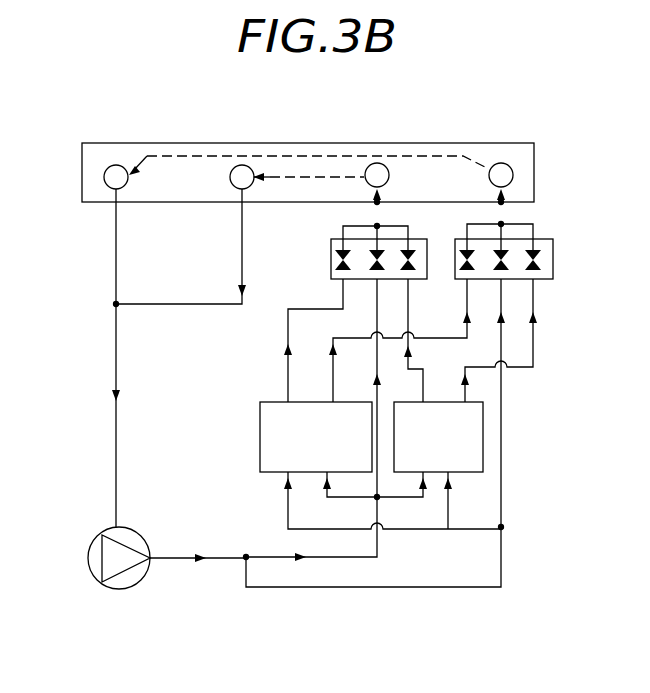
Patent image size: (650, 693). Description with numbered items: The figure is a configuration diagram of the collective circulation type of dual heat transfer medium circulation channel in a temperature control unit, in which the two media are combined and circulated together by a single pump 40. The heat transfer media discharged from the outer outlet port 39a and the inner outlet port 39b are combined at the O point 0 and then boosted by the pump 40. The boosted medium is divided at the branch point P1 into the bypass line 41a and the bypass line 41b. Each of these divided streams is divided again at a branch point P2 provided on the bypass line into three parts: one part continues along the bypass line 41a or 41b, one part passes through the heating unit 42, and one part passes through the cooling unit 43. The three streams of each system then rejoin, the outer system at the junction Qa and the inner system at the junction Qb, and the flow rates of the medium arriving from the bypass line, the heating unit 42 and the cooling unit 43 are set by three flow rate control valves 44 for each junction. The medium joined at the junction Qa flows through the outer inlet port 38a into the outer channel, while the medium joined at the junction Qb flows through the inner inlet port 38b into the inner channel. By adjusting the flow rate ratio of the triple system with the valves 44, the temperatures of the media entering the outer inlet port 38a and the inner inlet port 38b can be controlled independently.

The outer inlet port 38a is at (501, 163).
The inner inlet port 38b is at (377, 163).
The outer outlet port 39a is at (116, 165).
The inner outlet port 39b is at (242, 165).
The pump 40 is at (95, 540).
The bypass line 41a is at (503, 465).
The bypass line 41b is at (376, 367).
The heating unit 42 is at (259, 423).
The cooling unit 43 is at (484, 416).
The flow rate control valve 44 is at (334, 261).
The junction Qa is at (503, 224).
The junction Qb is at (375, 226).
The branch point P1 is at (249, 541).
The branch point P2 is at (380, 500).
The O point 0 is at (95, 305).